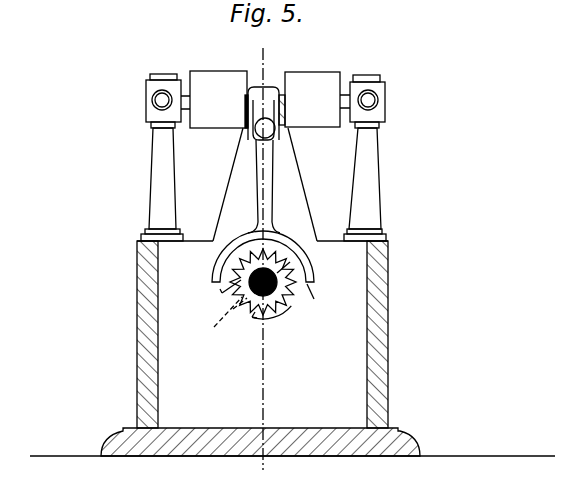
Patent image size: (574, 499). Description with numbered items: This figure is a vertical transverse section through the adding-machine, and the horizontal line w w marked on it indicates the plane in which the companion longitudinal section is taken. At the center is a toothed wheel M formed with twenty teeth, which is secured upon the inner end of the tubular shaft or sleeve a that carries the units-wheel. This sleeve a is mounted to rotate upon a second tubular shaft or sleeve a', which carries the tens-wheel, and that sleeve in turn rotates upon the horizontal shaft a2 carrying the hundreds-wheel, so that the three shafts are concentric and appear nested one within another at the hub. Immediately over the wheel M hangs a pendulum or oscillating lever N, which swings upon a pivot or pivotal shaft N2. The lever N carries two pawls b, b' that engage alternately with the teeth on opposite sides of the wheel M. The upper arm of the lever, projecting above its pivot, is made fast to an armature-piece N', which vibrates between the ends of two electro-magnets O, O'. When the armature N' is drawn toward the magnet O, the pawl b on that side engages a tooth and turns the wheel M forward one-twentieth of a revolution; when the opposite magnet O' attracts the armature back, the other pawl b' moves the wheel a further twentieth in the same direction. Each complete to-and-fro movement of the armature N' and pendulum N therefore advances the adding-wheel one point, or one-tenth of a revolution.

The section line w is at (263, 261).
The electro-magnet O is at (218, 99).
The electro-magnet O' is at (312, 99).
The armature-piece N' is at (265, 113).
The pendulum or oscillating lever N is at (263, 211).
The pivot or pivotal shaft N2 is at (245, 140).
The toothed wheel M is at (262, 292).
The tubular shaft or sleeve a is at (272, 320).
The tubular shaft or sleeve a' is at (293, 257).
The horizontal shaft a2 is at (220, 317).
The pawl b is at (219, 295).
The pawl b' is at (315, 300).